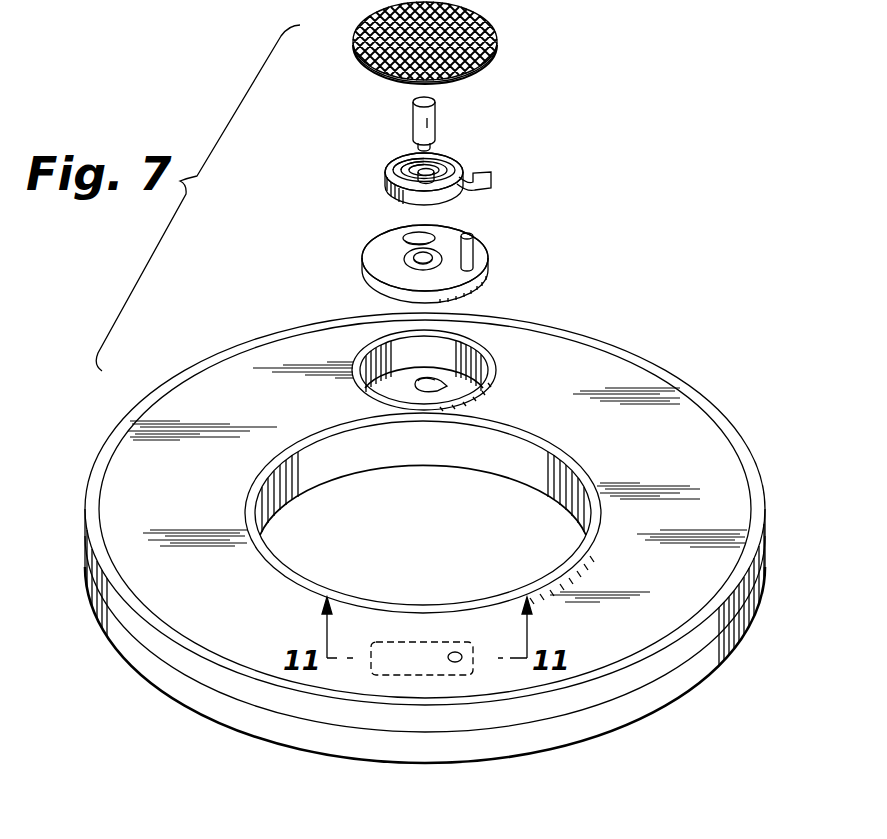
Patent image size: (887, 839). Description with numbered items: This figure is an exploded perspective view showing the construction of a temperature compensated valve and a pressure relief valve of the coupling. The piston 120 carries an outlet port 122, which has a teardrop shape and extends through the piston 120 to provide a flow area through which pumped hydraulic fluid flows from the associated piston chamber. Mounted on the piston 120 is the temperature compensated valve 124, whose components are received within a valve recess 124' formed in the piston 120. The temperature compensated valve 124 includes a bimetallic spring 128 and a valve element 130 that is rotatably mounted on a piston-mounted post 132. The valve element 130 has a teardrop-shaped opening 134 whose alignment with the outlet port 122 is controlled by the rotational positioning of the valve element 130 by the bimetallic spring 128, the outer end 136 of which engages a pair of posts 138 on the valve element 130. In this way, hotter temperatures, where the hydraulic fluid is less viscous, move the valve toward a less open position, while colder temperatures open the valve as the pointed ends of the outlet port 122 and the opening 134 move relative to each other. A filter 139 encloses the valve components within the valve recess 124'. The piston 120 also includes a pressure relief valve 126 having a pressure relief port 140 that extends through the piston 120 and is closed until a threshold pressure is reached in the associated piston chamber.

The piston 120 is at (708, 407).
The outlet port 122 is at (417, 379).
The temperature compensated valve 124 is at (500, 222).
The valve recess 124' is at (499, 351).
The pressure relief valve 126 is at (437, 676).
The bimetallic spring 128 is at (382, 179).
The valve element 130 is at (478, 291).
The piston-mounted post 132 is at (437, 121).
The teardrop-shaped opening 134 is at (410, 236).
The outer end 136 is at (489, 172).
The posts 138 is at (477, 252).
The filter 139 is at (497, 42).
The pressure relief port 140 is at (455, 652).